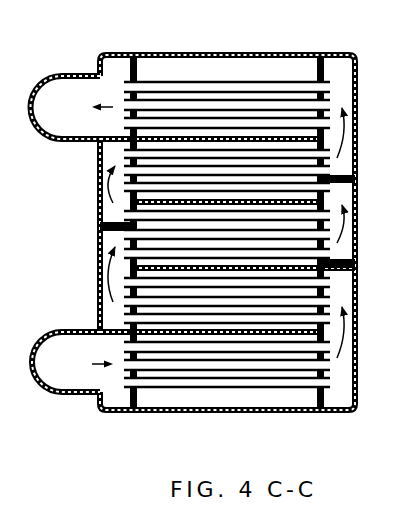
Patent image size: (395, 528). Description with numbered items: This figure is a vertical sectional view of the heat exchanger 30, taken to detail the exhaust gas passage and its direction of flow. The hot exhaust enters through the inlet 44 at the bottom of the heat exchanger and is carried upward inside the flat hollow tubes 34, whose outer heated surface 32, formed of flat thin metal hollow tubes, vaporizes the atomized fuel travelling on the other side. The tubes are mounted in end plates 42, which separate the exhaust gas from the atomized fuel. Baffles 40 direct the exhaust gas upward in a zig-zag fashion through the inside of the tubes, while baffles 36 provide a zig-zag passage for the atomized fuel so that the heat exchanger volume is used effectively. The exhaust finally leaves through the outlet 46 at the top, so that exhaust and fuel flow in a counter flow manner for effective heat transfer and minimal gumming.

The heat exchanger shell 30 is at (227, 232).
The heated surface 32 is at (223, 82).
The flat hollow tubes 34 is at (290, 86).
The baffles 36 is at (165, 139).
The baffles 40 is at (97, 150).
The end plates 42 is at (320, 402).
The inlet 44 is at (72, 362).
The outlet 46 is at (72, 107).